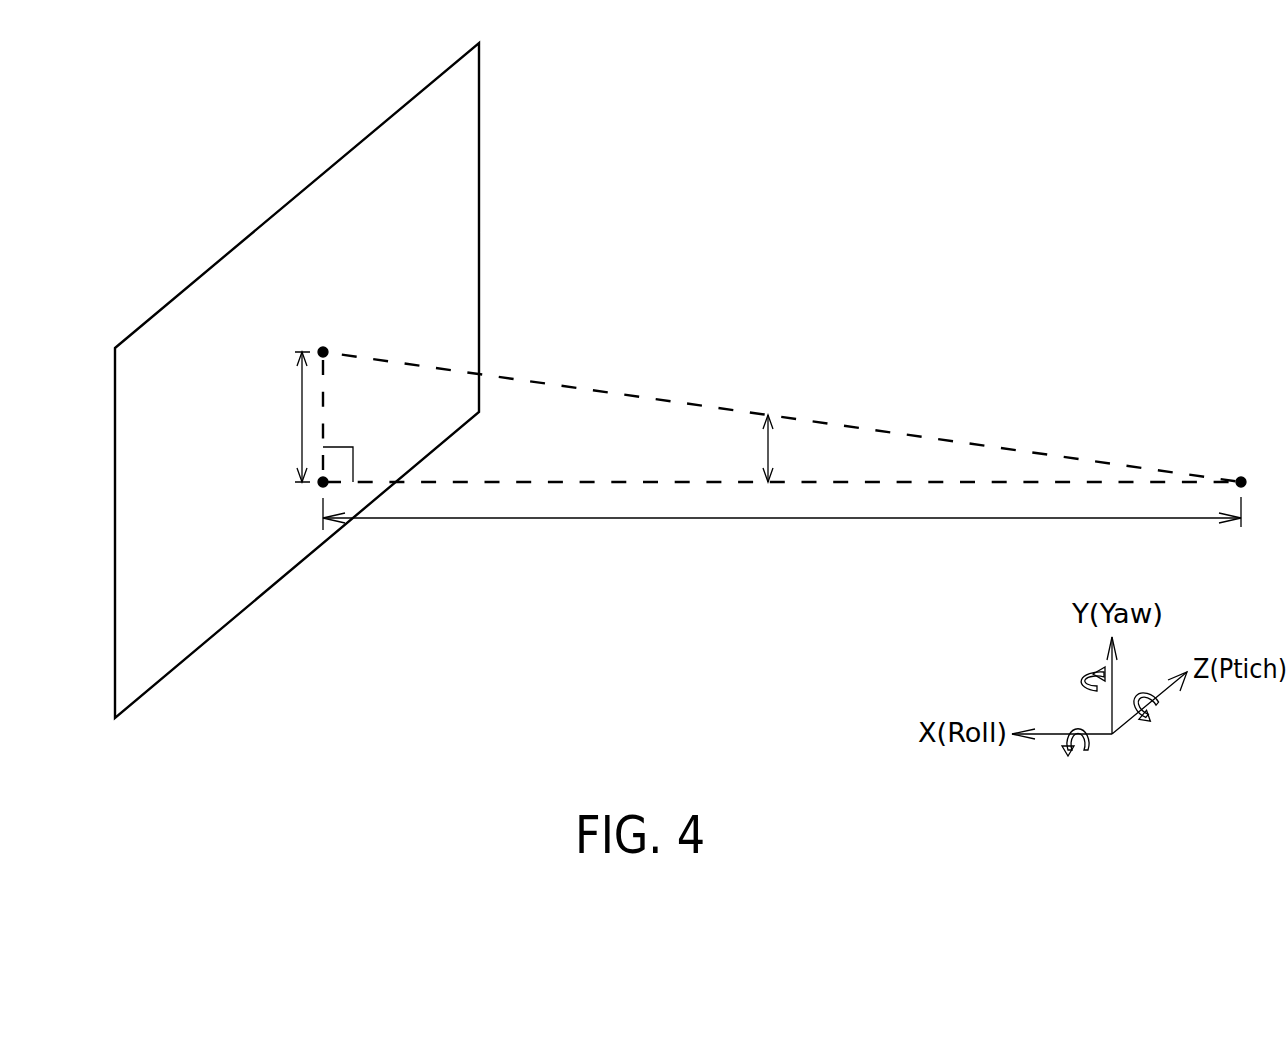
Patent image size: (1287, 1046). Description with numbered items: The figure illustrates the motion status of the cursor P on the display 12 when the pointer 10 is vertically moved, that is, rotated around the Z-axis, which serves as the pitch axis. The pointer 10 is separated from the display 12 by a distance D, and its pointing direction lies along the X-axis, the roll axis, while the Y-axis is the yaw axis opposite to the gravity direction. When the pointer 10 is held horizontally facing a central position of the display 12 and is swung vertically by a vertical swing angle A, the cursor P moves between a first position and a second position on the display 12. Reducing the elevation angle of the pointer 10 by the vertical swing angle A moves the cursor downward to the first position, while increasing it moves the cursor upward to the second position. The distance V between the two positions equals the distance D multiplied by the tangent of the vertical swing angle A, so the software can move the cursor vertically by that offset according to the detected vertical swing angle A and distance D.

The pointer 10 is at (1242, 477).
The display 12 is at (303, 190).
The distance V is at (291, 417).
The vertical swing angle A is at (756, 448).
The distance D is at (782, 528).